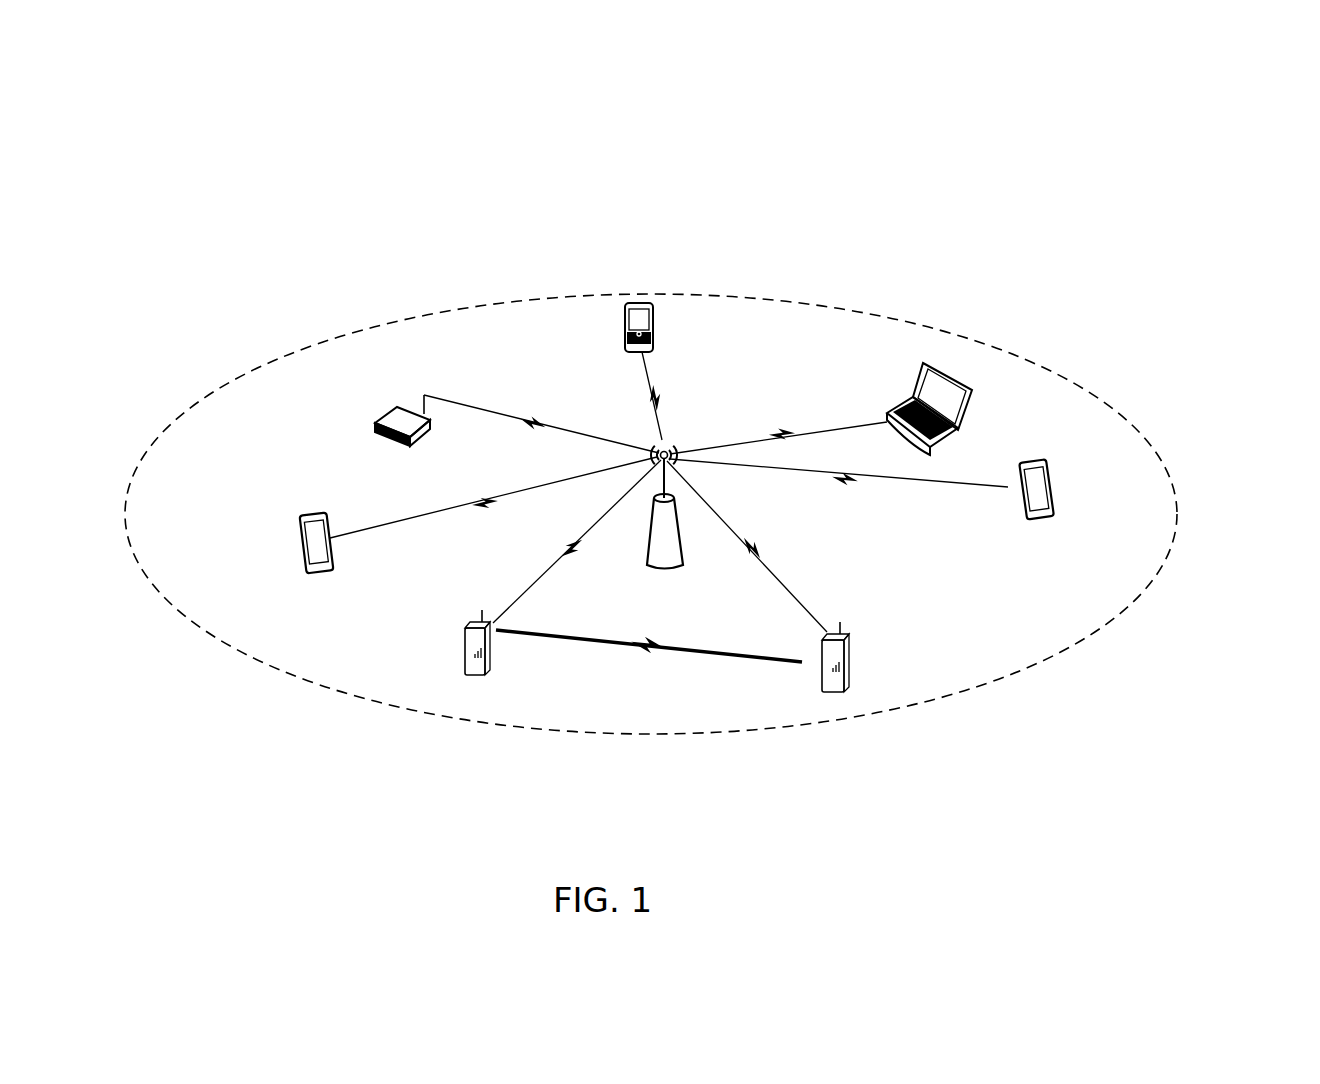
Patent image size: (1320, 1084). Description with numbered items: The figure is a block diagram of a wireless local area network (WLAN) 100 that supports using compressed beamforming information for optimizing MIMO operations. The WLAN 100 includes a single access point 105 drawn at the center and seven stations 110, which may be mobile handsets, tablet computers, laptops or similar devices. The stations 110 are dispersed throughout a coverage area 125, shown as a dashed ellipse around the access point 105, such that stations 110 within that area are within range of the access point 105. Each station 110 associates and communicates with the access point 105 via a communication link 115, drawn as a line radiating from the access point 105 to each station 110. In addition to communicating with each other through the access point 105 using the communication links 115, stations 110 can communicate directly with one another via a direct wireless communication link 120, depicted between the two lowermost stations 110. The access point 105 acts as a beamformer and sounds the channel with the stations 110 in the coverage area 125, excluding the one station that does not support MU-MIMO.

The wireless local area network 100 is at (1240, 90).
The access point 105 is at (681, 567).
The stations 110 is at (653, 340).
The communication link 115 is at (565, 430).
The direct wireless communication link 120 is at (637, 651).
The coverage area 125 is at (920, 322).